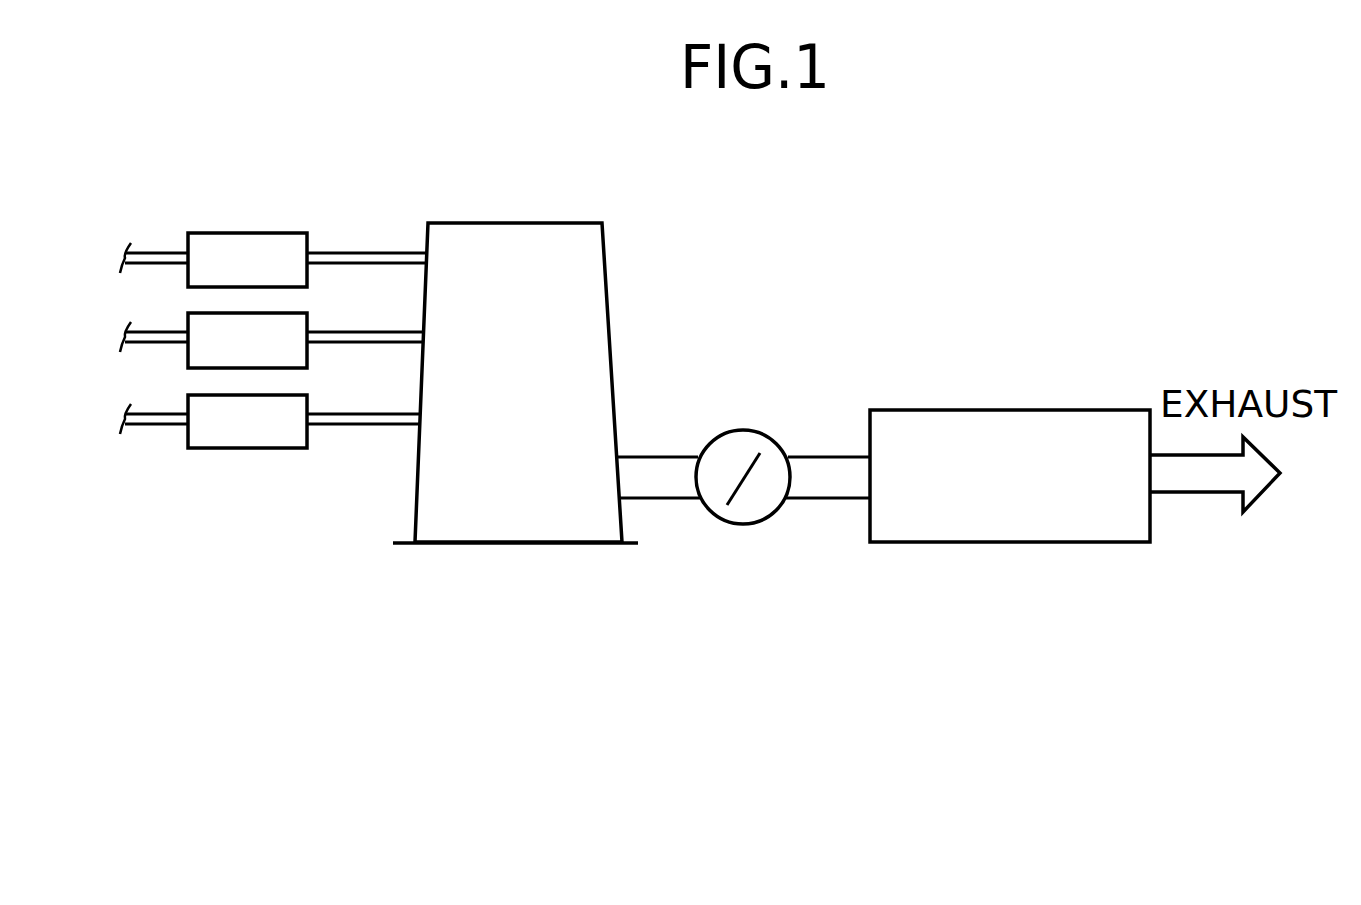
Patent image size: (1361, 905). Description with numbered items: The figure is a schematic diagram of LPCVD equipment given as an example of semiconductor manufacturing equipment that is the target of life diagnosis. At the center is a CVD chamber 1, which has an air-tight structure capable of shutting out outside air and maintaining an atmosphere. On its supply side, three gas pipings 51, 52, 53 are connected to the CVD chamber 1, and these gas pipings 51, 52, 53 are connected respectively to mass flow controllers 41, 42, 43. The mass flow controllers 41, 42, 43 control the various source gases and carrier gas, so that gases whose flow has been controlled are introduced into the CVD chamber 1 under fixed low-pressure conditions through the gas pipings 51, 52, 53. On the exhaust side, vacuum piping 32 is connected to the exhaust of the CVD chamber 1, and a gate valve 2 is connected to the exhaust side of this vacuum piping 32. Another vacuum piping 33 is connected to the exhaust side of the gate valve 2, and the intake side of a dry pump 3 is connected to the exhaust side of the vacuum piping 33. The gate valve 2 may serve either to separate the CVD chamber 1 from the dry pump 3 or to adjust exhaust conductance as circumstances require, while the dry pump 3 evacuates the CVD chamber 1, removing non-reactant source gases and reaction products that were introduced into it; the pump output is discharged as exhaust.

The CVD chamber 1 is at (493, 223).
The gate valve 2 is at (742, 432).
The dry pump 3 is at (1015, 410).
The vacuum piping 32 is at (670, 500).
The vacuum piping 33 is at (832, 500).
The mass flow controller 41 is at (210, 232).
The mass flow controller 42 is at (213, 313).
The mass flow controller 43 is at (213, 393).
The gas piping 51 is at (338, 250).
The gas piping 52 is at (343, 332).
The gas piping 53 is at (343, 413).